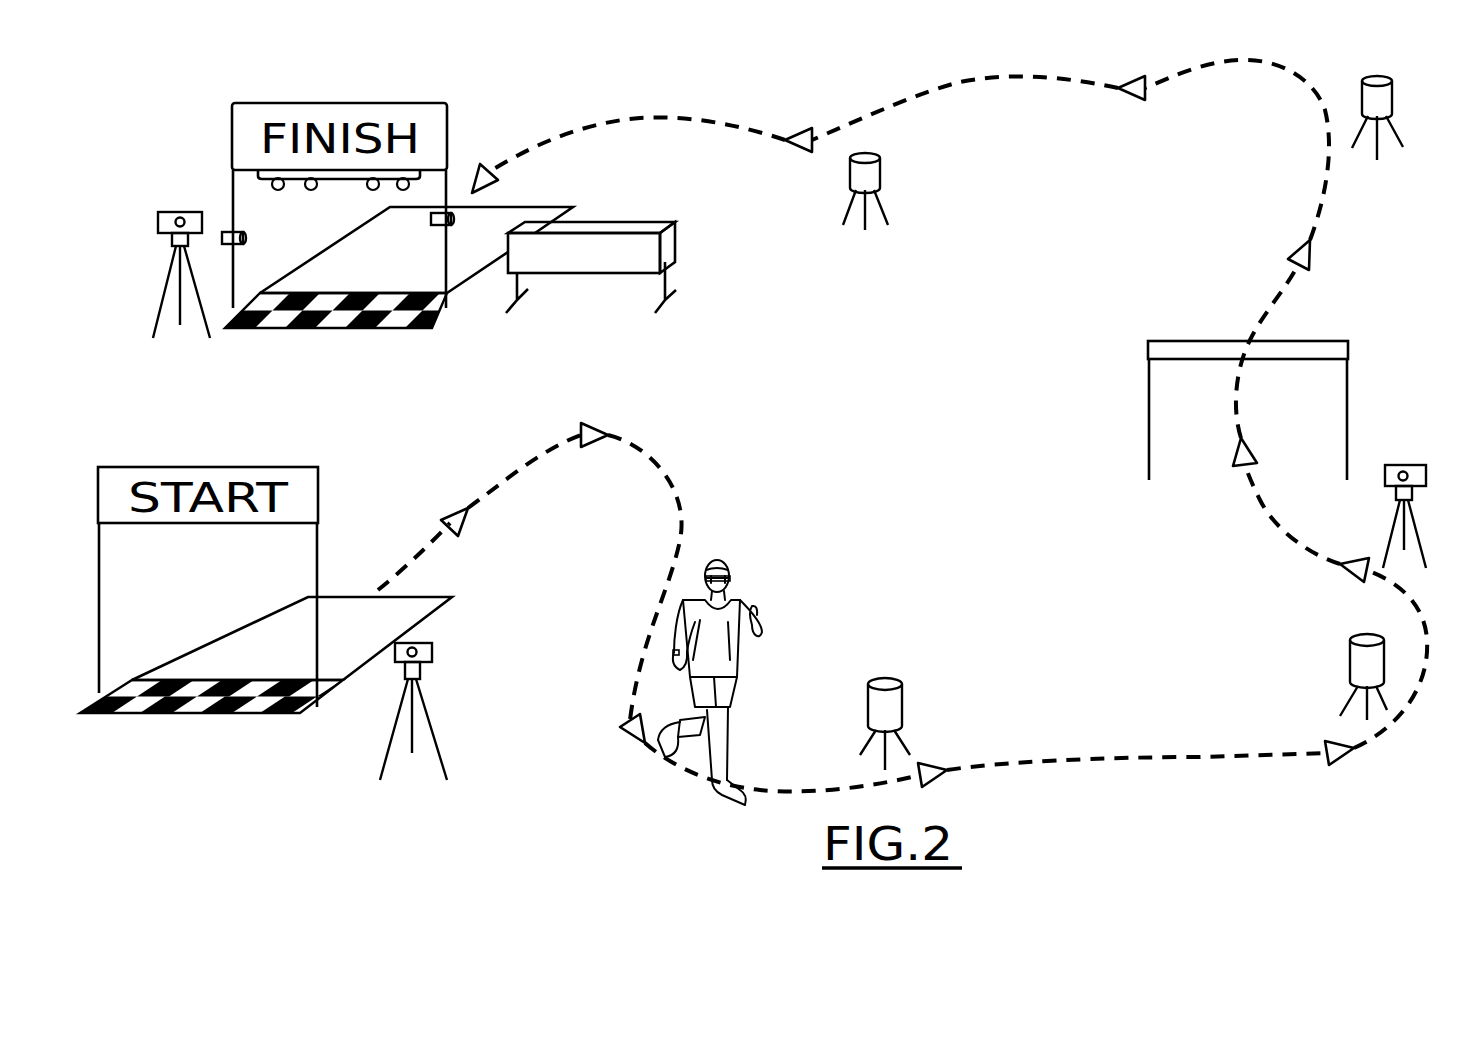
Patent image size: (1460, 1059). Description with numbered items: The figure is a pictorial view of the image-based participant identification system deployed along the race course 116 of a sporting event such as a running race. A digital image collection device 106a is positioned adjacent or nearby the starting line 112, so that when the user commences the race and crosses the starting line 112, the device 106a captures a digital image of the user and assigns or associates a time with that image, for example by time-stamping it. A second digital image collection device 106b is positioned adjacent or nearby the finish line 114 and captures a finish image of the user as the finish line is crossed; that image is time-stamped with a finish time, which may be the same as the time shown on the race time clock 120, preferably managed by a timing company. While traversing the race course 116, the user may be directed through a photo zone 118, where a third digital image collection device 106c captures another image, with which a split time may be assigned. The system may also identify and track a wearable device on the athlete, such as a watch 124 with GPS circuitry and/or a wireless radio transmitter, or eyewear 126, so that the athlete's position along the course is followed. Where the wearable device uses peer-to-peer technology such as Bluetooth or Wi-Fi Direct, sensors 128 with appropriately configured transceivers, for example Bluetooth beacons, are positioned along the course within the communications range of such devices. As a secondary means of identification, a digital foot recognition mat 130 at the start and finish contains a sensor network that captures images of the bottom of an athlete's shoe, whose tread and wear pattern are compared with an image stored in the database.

The digital image collection device 106a is at (433, 652).
The digital image collection device 106b is at (200, 224).
The digital image collection device 106c is at (1397, 465).
The starting line 112 is at (206, 713).
The finish line 114 is at (431, 328).
The race course 116 is at (1040, 758).
The photo zone 118 is at (1348, 383).
The race time clock 120 is at (669, 245).
The watch 124 is at (673, 658).
The eyewear 126 is at (733, 577).
The sensors 128 is at (888, 707).
The digital foot recognition mat 130 is at (427, 259).